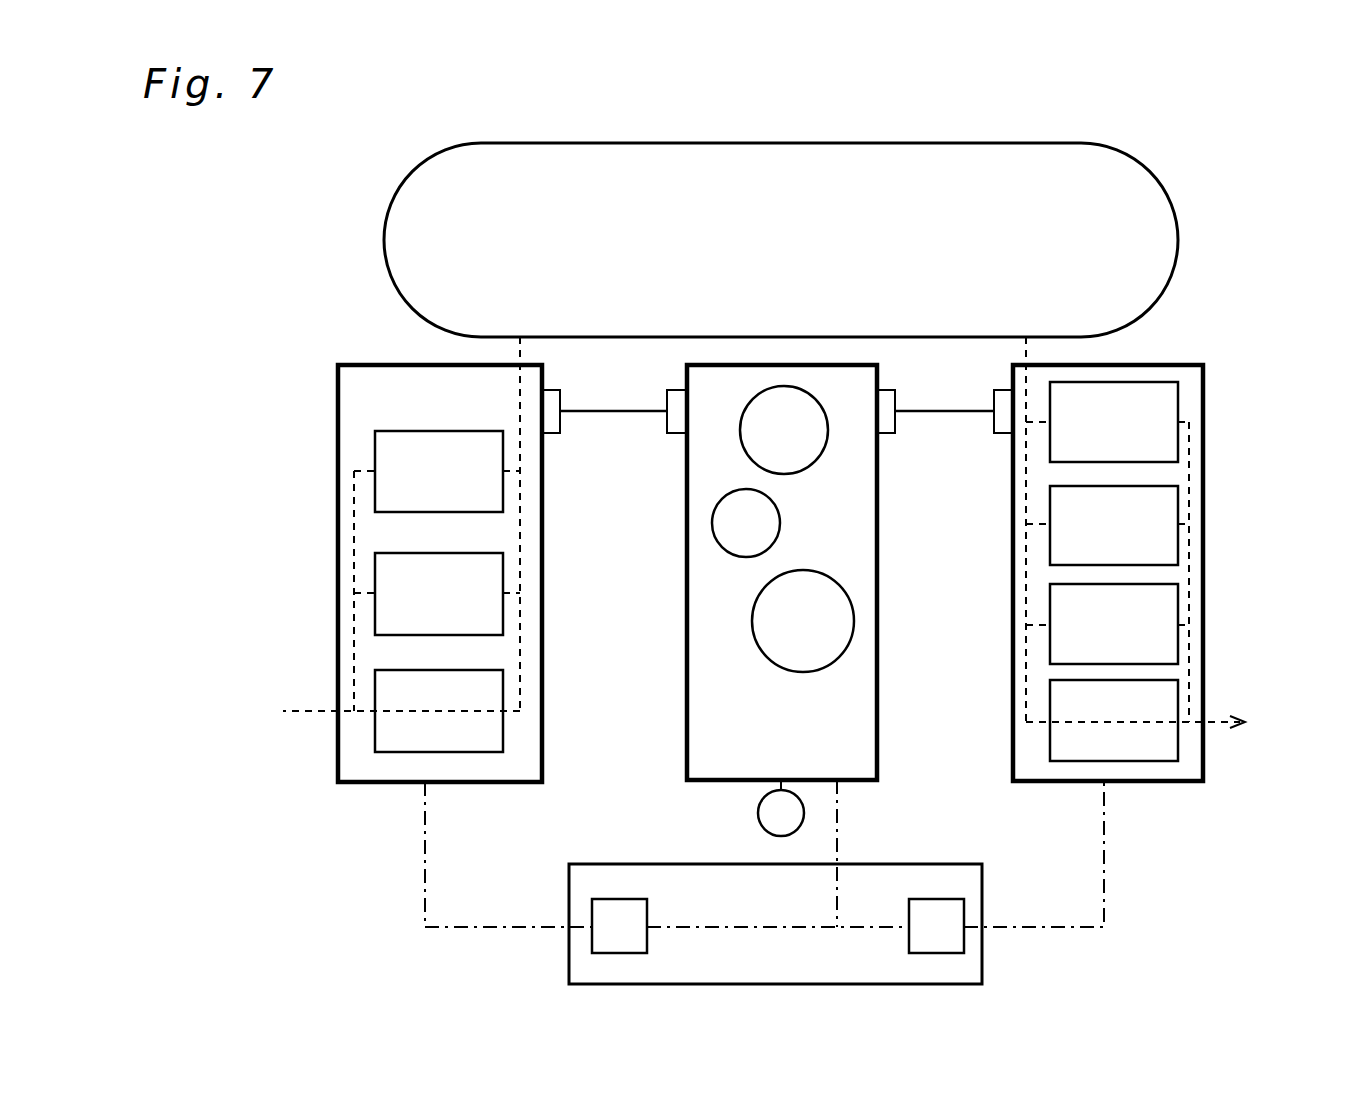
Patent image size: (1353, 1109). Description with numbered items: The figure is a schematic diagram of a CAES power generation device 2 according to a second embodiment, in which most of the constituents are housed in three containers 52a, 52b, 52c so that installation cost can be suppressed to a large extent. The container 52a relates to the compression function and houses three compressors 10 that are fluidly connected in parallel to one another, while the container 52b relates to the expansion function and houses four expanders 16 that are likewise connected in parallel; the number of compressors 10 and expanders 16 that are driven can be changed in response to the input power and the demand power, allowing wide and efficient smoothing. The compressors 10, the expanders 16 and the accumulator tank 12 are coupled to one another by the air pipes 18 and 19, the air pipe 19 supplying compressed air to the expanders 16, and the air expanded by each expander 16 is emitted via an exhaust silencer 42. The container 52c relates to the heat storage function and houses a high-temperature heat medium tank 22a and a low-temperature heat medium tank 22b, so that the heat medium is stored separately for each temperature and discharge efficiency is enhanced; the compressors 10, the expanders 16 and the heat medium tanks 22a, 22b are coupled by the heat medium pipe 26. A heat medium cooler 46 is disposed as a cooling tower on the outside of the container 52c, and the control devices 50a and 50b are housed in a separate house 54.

The CAES power generation device 2 is at (1176, 325).
The accumulator tank 12 is at (781, 240).
The air pipe 18 is at (520, 348).
The air pipe 19 is at (1026, 350).
The compressor 10 is at (375, 440).
The expander 16 is at (1178, 395).
The high-temperature heat medium tank 22a is at (784, 430).
The low-temperature heat medium tank 22b is at (746, 523).
The heat medium pipe 26 is at (615, 413).
The exhaust silencer 42 is at (803, 621).
The heat medium cooler 46 is at (758, 818).
The control device 50a is at (647, 940).
The control device 50b is at (909, 942).
The container 52a is at (478, 782).
The container 52b is at (1150, 781).
The container 52c is at (862, 780).
The house 54 is at (918, 864).